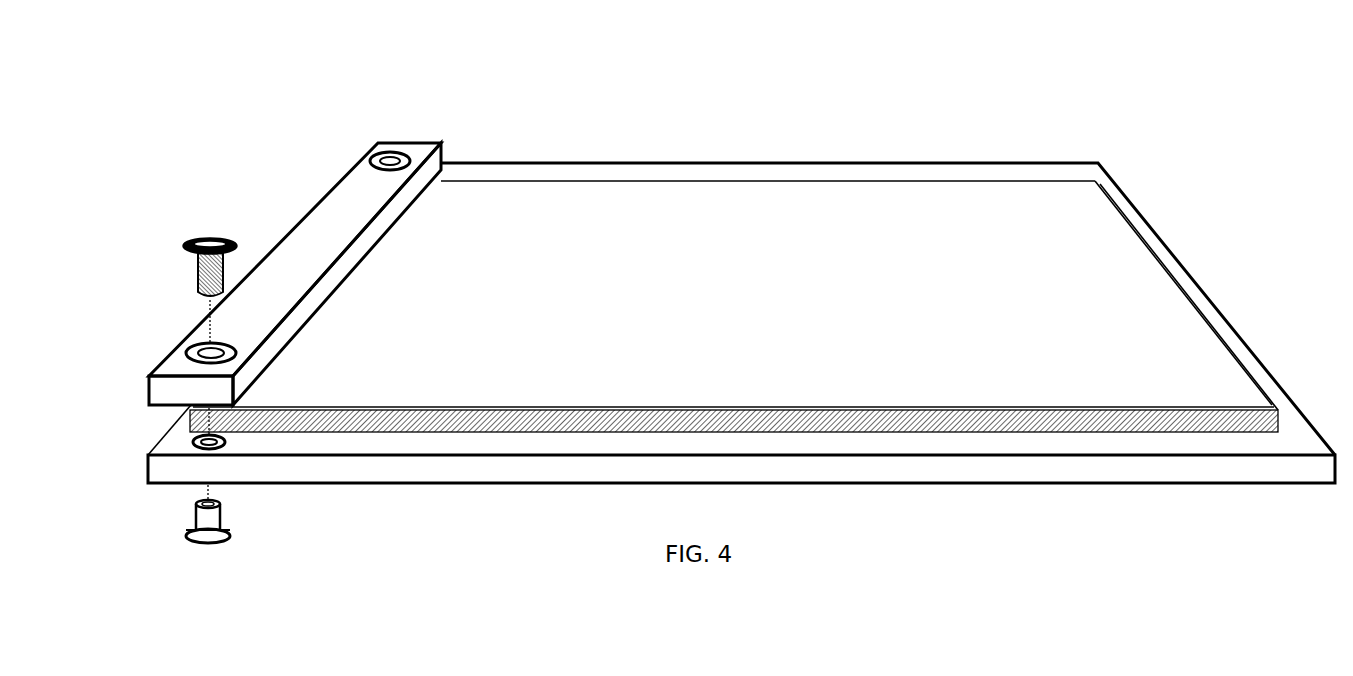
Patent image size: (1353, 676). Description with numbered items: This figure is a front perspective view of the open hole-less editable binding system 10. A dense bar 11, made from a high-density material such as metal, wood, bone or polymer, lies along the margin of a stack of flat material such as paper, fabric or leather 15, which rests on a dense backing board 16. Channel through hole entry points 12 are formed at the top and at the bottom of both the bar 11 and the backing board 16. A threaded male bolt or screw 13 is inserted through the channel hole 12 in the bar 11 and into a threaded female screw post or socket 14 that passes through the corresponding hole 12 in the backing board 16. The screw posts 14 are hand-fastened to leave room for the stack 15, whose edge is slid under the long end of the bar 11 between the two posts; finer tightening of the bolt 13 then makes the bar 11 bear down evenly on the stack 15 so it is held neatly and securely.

The hole-less editable binding system 10 is at (150, 118).
The dense bar 11 is at (297, 227).
The channel through hole entry points 12 is at (372, 160).
The threaded male bolt or screw 13 is at (188, 250).
The threaded female screw post or socket 14 is at (188, 534).
The flat material such as paper, fabric or leather 15 is at (190, 418).
The dense backing board 16 is at (160, 467).